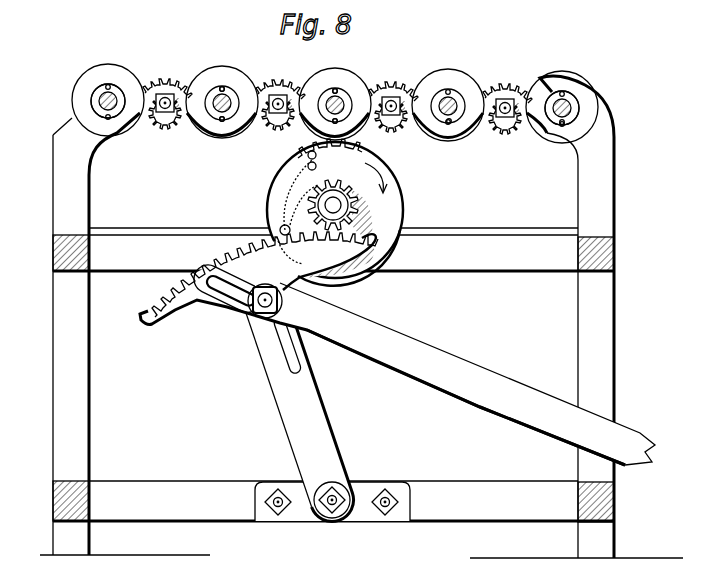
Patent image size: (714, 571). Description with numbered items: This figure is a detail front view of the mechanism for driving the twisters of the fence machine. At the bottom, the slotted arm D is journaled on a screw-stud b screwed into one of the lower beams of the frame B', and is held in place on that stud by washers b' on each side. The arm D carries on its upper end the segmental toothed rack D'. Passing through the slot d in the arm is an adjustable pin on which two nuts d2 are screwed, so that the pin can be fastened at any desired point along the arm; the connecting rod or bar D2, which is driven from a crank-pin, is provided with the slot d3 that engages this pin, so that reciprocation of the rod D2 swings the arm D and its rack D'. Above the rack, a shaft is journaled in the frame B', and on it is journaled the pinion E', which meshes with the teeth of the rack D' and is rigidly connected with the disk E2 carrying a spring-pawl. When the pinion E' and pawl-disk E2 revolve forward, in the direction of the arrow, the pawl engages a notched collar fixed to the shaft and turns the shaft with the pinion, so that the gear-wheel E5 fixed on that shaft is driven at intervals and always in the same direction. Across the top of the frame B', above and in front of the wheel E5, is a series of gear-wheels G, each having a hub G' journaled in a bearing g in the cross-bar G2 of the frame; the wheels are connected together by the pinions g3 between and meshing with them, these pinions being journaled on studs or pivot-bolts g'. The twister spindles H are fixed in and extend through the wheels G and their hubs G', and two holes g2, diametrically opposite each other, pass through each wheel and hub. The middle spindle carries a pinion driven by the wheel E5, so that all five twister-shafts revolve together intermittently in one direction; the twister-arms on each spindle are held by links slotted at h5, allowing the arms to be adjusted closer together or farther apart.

The frame B' is at (361, 346).
The twister spindle H is at (103, 109).
The gear-wheel G is at (577, 94).
The cross-bar G2 is at (99, 74).
The hub G' is at (339, 86).
The holes g2 is at (238, 88).
The pinion g3 is at (168, 78).
The bearing g is at (355, 132).
The studs or pivot-bolts g' is at (327, 126).
The slot h5 is at (338, 88).
The pinion E' is at (347, 194).
The disk E2 is at (284, 191).
The gear-wheel E5 is at (372, 147).
The segmental toothed rack D' is at (397, 348).
The connecting rod or bar D2 is at (467, 374).
The slot d3 is at (222, 291).
The nuts d2 is at (255, 313).
The slot d is at (264, 336).
The slotted arm D is at (297, 408).
The stud b is at (332, 515).
The washers b' is at (332, 515).